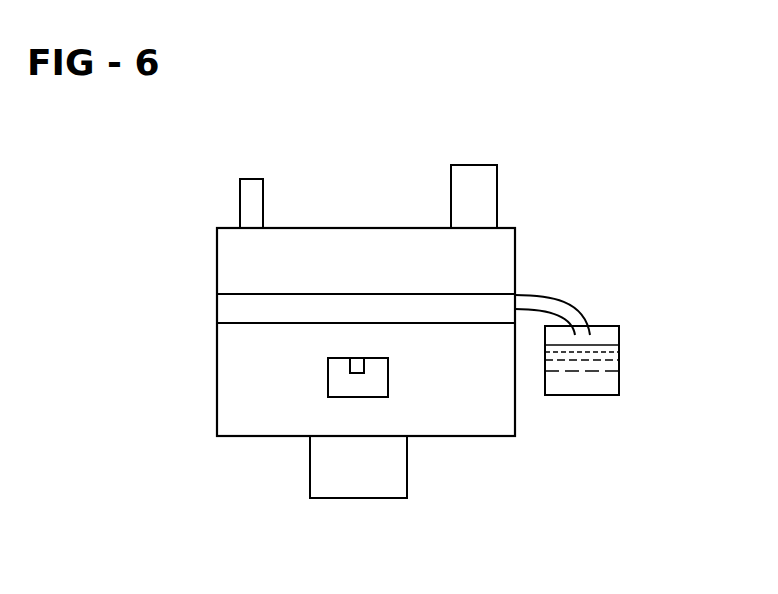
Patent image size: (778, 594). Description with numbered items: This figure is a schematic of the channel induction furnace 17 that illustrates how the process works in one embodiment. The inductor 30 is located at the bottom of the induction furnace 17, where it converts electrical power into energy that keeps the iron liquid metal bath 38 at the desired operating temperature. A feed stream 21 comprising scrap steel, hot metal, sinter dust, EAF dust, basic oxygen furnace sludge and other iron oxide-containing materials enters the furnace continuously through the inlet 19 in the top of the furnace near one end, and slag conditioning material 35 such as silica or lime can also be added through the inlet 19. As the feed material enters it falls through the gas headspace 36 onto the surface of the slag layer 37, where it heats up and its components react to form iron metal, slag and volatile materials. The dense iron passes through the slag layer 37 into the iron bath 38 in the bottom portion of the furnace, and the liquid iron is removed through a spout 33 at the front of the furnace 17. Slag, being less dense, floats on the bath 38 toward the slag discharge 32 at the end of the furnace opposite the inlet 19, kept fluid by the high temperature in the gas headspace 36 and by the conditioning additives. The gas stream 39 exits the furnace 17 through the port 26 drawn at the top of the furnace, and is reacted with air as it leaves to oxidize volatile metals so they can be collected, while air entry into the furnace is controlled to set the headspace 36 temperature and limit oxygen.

The induction furnace 17 is at (582, 176).
The inlet 19 is at (263, 180).
The feed stream 21 is at (251, 178).
The outlet port 26 is at (497, 176).
The inductor 30 is at (310, 466).
The slag discharge 32 is at (565, 289).
The spout 33 is at (370, 369).
The slag conditioning material 35 is at (254, 133).
The gas headspace 36 is at (217, 246).
The slag layer 37 is at (232, 307).
The iron liquid metal bath 38 is at (217, 367).
The gas stream 39 is at (474, 228).